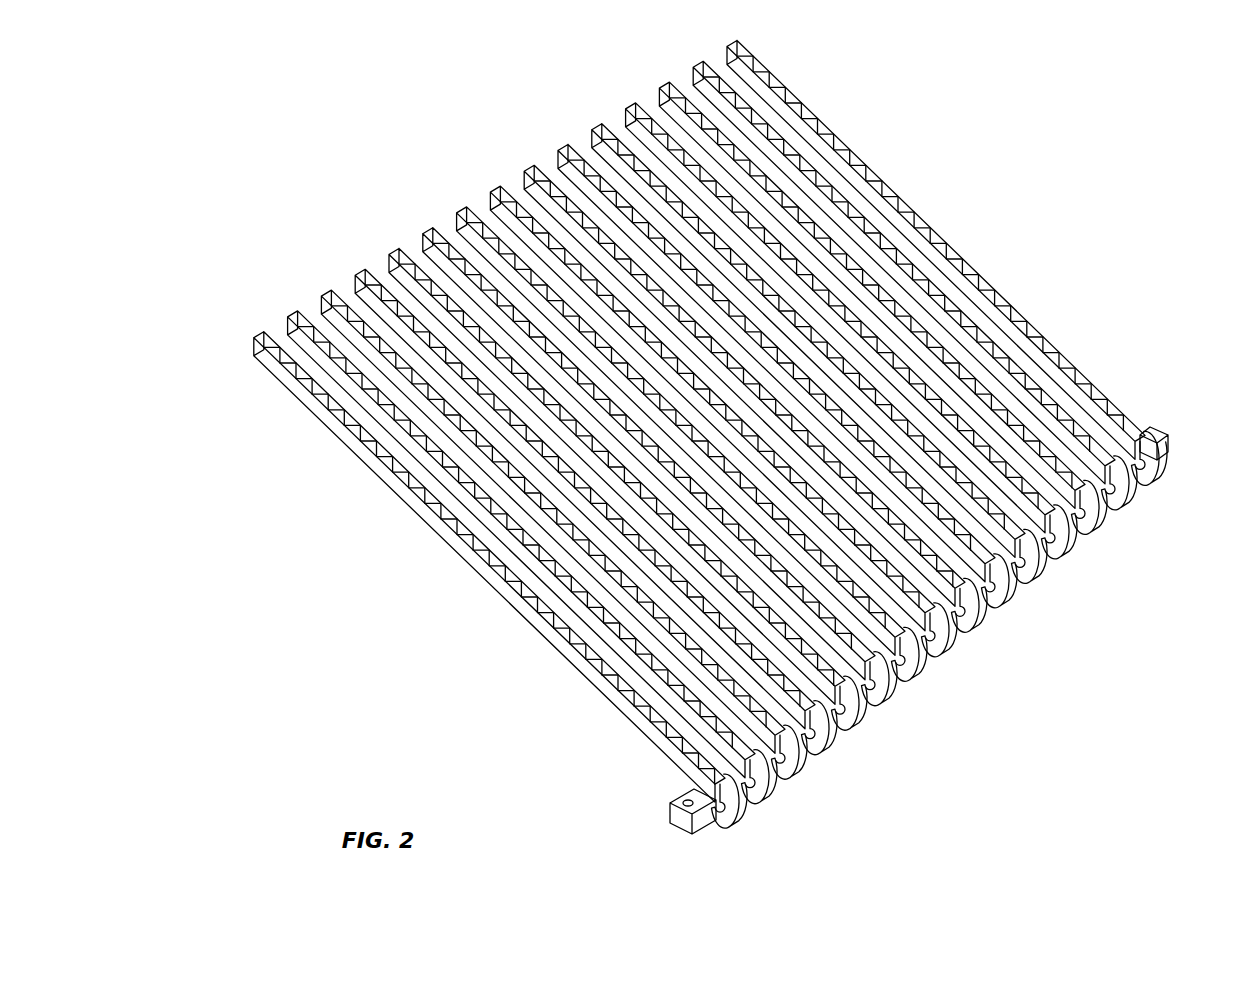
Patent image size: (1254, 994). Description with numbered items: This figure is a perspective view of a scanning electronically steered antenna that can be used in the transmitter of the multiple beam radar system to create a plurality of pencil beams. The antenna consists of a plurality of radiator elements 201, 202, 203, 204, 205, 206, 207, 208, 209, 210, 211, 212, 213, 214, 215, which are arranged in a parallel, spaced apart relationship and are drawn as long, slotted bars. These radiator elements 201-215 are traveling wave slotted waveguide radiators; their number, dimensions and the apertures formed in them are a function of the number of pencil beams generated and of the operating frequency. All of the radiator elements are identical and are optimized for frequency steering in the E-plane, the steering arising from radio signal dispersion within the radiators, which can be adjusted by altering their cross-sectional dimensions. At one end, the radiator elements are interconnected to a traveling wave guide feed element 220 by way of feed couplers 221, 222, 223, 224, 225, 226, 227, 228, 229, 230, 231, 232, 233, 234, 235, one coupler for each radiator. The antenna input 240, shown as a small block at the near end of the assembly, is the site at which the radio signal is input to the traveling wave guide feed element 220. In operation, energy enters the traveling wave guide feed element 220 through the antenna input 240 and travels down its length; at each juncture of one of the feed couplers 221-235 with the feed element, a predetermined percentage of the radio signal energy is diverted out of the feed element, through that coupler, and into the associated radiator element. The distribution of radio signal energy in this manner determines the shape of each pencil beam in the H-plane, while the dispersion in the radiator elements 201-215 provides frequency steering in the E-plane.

The radiator element 201 is at (725, 46).
The radiator element 202 is at (691, 67).
The radiator element 203 is at (657, 88).
The radiator element 204 is at (624, 109).
The radiator element 205 is at (590, 130).
The radiator element 206 is at (556, 150).
The radiator element 207 is at (522, 171).
The radiator element 208 is at (488, 192).
The radiator element 209 is at (455, 213).
The radiator element 210 is at (421, 234).
The radiator element 211 is at (387, 254).
The radiator element 212 is at (353, 275).
The radiator element 213 is at (319, 296).
The radiator element 214 is at (286, 317).
The radiator element 215 is at (252, 338).
The traveling wave guide feed element 220 is at (660, 844).
The feed coupler 221 is at (1159, 473).
The feed coupler 222 is at (1129, 498).
The feed coupler 223 is at (1099, 522).
The feed coupler 224 is at (1069, 547).
The feed coupler 225 is at (1039, 571).
The feed coupler 226 is at (1009, 596).
The feed coupler 227 is at (979, 620).
The feed coupler 228 is at (949, 645).
The feed coupler 229 is at (919, 669).
The feed coupler 230 is at (889, 694).
The feed coupler 231 is at (859, 718).
The feed coupler 232 is at (829, 743).
The feed coupler 233 is at (799, 767).
The feed coupler 234 is at (769, 792).
The feed coupler 235 is at (739, 816).
The antenna input 240 is at (666, 798).